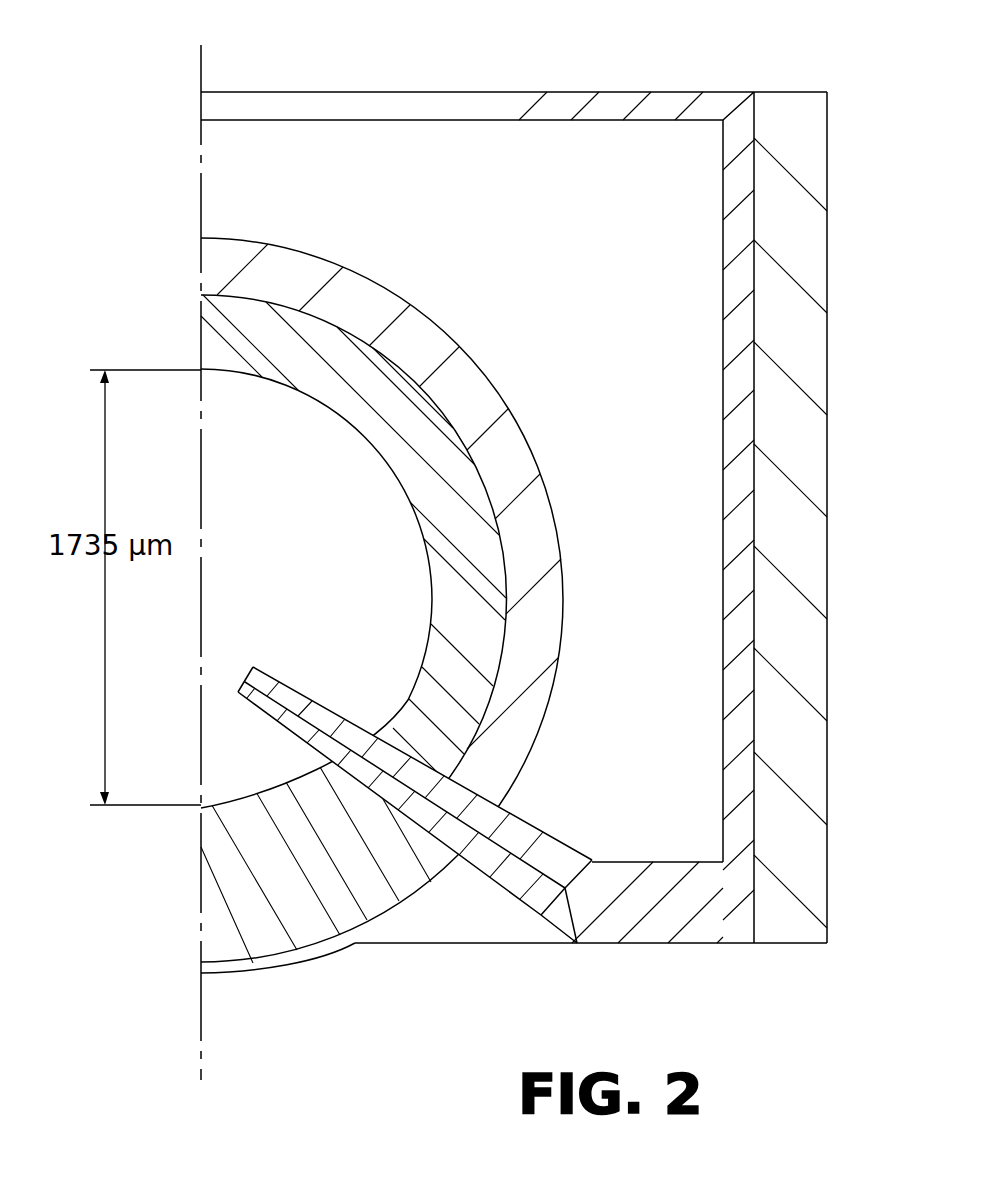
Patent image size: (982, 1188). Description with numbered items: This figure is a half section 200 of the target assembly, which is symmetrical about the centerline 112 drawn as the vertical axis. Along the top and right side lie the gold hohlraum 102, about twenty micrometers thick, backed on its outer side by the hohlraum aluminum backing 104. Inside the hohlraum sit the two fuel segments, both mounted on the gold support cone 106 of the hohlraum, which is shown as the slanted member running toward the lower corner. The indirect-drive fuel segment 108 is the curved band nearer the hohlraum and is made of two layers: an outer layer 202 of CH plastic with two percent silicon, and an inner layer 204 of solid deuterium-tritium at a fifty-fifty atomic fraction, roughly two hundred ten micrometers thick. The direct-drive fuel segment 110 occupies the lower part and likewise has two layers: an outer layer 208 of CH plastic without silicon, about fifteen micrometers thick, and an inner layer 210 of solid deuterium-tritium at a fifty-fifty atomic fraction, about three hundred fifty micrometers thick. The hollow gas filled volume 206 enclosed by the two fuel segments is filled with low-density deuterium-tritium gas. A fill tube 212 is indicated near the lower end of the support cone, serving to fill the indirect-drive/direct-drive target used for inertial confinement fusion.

The gold hohlraum 102 is at (723, 253).
The hohlraum aluminum backing 104 is at (793, 92).
The gold support cone 106 is at (577, 840).
The indirect-drive fuel segment 108 is at (434, 241).
The direct-drive fuel segment 110 is at (326, 991).
The centerline 112 is at (201, 217).
The half section of target assembly 200 is at (166, 118).
The outer layer CH plastic +2% Si 202 is at (201, 278).
The inner layer solid deuterium-tritium 204 is at (201, 333).
The gas filled volume 206 is at (330, 567).
The outer layer CH plastic (no Si) 208 is at (201, 970).
The inner layer solid deuterium-tritium 210 is at (201, 885).
The fill tube 212 is at (545, 917).